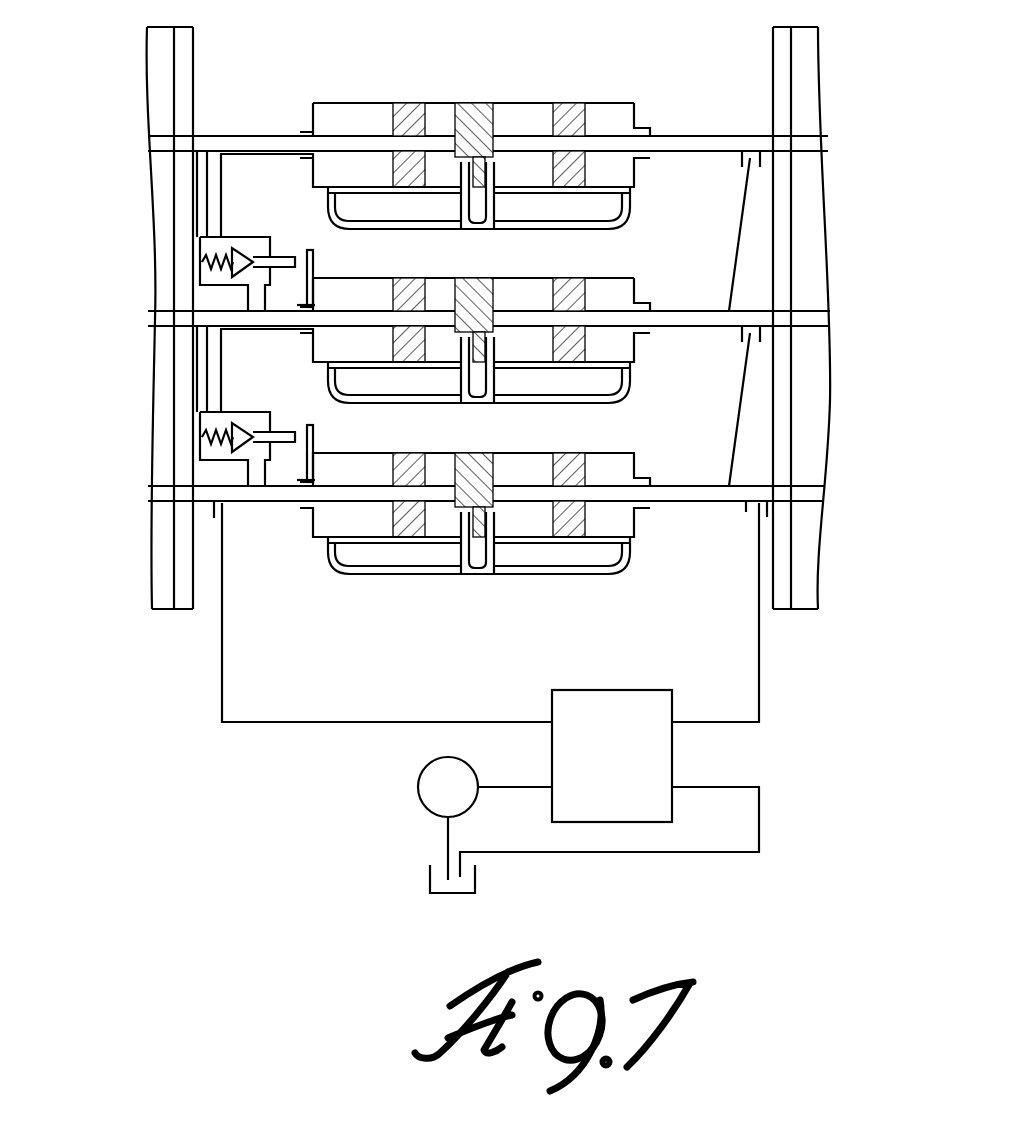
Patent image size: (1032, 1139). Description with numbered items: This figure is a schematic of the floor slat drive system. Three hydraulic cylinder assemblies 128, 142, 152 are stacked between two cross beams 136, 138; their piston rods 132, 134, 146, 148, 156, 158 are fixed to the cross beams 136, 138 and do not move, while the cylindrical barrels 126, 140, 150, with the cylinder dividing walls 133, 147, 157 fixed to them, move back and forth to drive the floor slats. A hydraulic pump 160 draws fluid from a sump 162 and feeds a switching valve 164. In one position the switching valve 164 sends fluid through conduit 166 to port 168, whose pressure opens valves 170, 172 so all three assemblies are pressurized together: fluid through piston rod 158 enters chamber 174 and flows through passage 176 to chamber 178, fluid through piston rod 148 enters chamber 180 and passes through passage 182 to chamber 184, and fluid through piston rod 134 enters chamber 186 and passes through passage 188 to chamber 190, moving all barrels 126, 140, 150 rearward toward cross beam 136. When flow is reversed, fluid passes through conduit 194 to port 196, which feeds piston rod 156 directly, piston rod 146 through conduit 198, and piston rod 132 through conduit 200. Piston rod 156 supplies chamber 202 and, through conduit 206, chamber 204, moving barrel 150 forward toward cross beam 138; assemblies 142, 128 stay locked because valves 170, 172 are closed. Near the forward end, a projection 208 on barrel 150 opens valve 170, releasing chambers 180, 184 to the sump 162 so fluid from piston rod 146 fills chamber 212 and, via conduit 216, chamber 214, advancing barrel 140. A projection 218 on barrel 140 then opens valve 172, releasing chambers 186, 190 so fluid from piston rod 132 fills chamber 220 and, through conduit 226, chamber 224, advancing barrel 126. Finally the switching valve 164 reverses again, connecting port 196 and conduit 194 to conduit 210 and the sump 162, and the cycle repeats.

The cylindrical barrel 126 is at (527, 102).
The hydraulic cylinder assembly 128 is at (495, 155).
The piston rod 132 is at (748, 135).
The cylinder dividing wall 133 is at (503, 102).
The piston rod 134 is at (190, 141).
The cross beam 136 is at (815, 52).
The cross beam 138 is at (165, 40).
The cylindrical barrel 140 is at (625, 290).
The hydraulic cylinder assembly 142 is at (495, 363).
The piston rod 146 is at (790, 318).
The cylinder dividing wall 147 is at (498, 309).
The piston rod 148 is at (190, 325).
The cylindrical barrel 150 is at (612, 445).
The hydraulic cylinder assembly 152 is at (498, 541).
The piston rod 156 is at (790, 501).
The cylinder dividing wall 157 is at (503, 472).
The piston rod 158 is at (200, 494).
The hydraulic pump 160 is at (427, 798).
The sump 162 is at (428, 879).
The switching valve 164 is at (662, 758).
The conduit 166 is at (276, 723).
The port 168 is at (214, 510).
The valve 170 is at (203, 436).
The valve 172 is at (200, 250).
The chamber 174 is at (445, 530).
The passage 176 is at (608, 569).
The chamber 178 is at (623, 470).
The chamber 180 is at (441, 296).
The passage 182 is at (632, 386).
The chamber 184 is at (638, 345).
The chamber 186 is at (442, 102).
The passage 188 is at (613, 210).
The chamber 190 is at (623, 103).
The conduit 194 is at (760, 684).
The port 196 is at (748, 508).
The conduit 198 is at (745, 392).
The conduit 200 is at (745, 232).
The chamber 202 is at (520, 468).
The chamber 204 is at (348, 470).
The conduit 206 is at (352, 573).
The projection 208 is at (311, 425).
The conduit 210 is at (660, 854).
The chamber 212 is at (531, 290).
The chamber 214 is at (352, 292).
The conduit 216 is at (462, 394).
The projection 218 is at (306, 250).
The chamber 220 is at (541, 107).
The chamber 224 is at (357, 103).
The conduit 226 is at (322, 193).